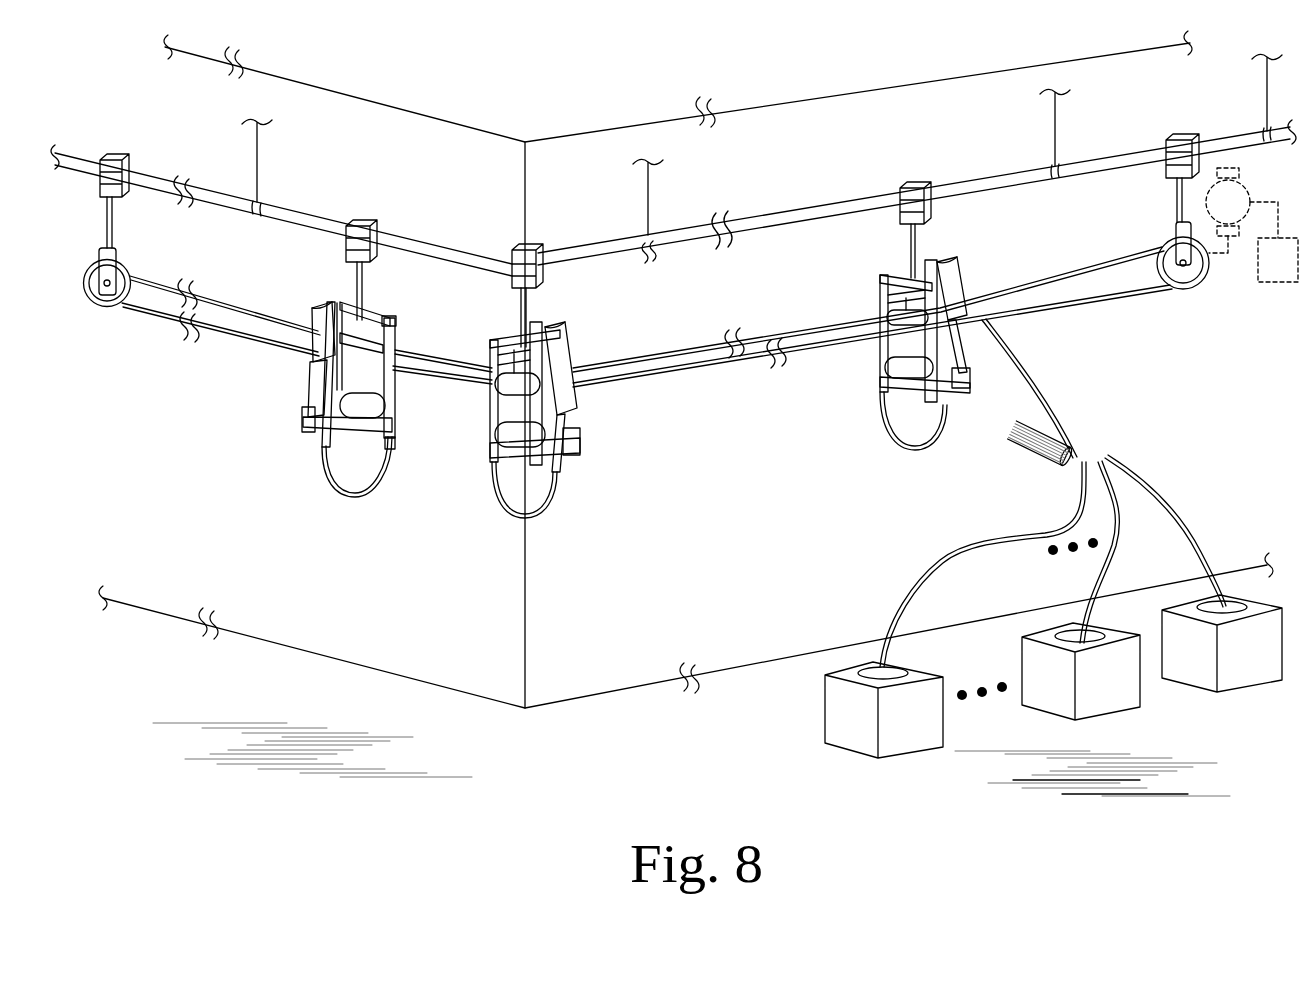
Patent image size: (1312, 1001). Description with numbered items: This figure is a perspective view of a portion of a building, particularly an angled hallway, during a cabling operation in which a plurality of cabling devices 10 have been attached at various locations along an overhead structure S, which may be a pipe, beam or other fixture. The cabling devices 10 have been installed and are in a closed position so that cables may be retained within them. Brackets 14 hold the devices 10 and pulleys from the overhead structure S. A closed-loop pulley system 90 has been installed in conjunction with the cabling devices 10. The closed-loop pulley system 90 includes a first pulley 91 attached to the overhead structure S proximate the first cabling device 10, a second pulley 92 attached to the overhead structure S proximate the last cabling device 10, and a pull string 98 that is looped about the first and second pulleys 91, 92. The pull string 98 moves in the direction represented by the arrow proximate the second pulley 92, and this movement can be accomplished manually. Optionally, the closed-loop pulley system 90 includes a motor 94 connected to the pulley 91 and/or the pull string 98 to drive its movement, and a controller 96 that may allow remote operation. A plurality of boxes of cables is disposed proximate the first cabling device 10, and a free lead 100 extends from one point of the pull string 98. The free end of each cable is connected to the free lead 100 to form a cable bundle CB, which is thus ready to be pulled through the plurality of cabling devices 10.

The cabling device 10 is at (296, 285).
The track mounting bracket 14 is at (350, 212).
The overhead structure S is at (762, 214).
The second pulley 92 is at (93, 230).
The first pulley 91 is at (1188, 291).
The pull string 98 is at (1035, 284).
The motor 94 is at (1246, 182).
The controller 96 is at (1277, 284).
The closed-loop pulley system 90 is at (1252, 285).
The free lead 100 is at (1040, 374).
The cable bundle CB is at (1034, 452).